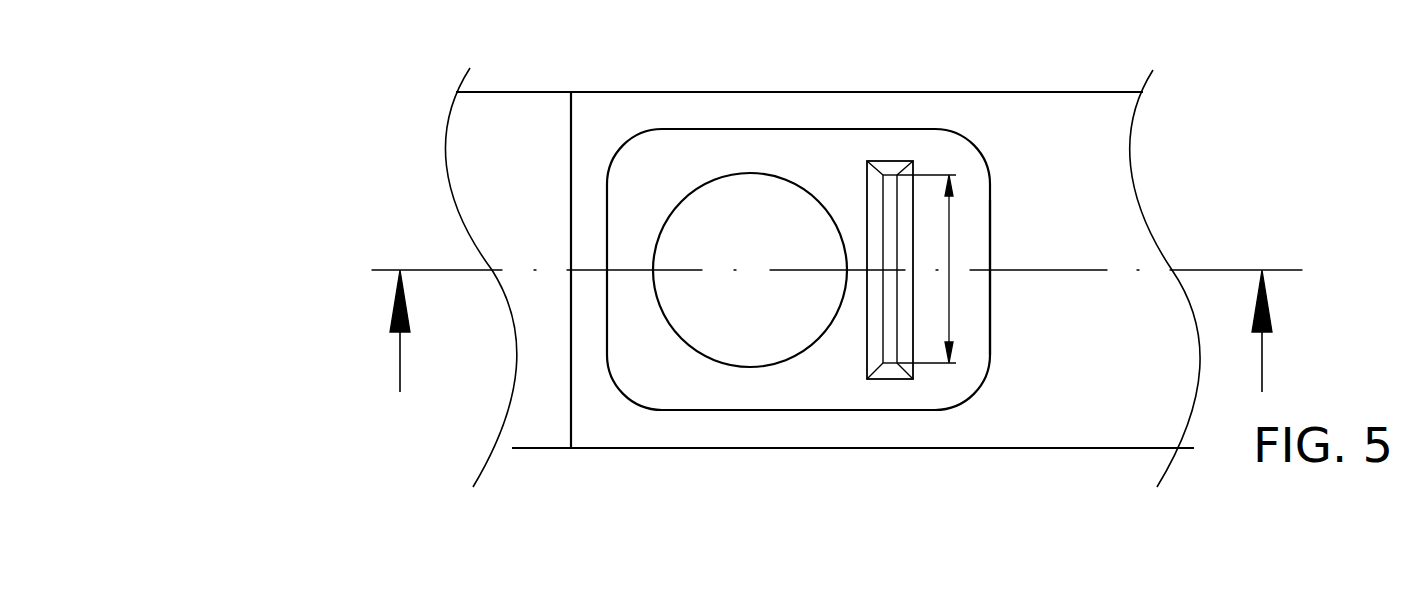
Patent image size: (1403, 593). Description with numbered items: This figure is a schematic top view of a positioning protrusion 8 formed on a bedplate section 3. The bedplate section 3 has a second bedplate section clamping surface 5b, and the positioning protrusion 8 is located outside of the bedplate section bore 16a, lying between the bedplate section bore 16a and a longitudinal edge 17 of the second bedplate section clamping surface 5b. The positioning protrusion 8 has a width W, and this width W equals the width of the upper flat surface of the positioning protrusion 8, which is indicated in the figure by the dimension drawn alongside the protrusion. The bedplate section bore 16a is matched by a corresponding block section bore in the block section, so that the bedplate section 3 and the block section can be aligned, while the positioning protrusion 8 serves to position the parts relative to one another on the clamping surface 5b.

The bedplate section 3 is at (967, 77).
The second bedplate section clamping surface 5b is at (805, 157).
The positioning protrusion 8 is at (887, 197).
The bedplate section bore 16a is at (715, 203).
The longitudinal edge 17 is at (991, 218).
The width W is at (950, 255).